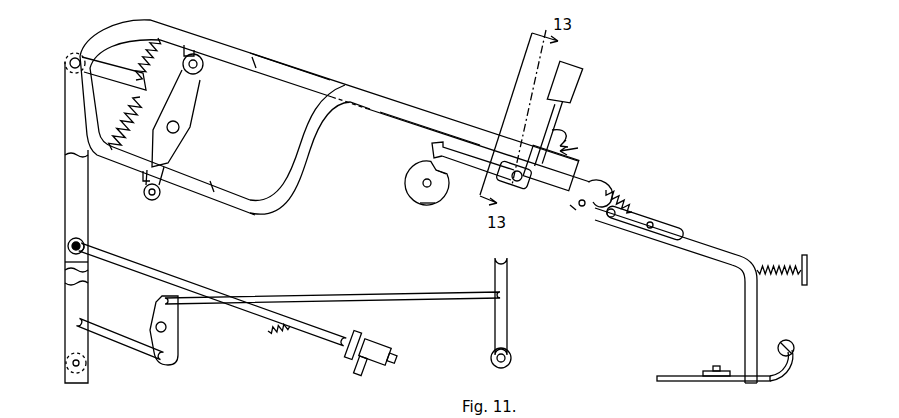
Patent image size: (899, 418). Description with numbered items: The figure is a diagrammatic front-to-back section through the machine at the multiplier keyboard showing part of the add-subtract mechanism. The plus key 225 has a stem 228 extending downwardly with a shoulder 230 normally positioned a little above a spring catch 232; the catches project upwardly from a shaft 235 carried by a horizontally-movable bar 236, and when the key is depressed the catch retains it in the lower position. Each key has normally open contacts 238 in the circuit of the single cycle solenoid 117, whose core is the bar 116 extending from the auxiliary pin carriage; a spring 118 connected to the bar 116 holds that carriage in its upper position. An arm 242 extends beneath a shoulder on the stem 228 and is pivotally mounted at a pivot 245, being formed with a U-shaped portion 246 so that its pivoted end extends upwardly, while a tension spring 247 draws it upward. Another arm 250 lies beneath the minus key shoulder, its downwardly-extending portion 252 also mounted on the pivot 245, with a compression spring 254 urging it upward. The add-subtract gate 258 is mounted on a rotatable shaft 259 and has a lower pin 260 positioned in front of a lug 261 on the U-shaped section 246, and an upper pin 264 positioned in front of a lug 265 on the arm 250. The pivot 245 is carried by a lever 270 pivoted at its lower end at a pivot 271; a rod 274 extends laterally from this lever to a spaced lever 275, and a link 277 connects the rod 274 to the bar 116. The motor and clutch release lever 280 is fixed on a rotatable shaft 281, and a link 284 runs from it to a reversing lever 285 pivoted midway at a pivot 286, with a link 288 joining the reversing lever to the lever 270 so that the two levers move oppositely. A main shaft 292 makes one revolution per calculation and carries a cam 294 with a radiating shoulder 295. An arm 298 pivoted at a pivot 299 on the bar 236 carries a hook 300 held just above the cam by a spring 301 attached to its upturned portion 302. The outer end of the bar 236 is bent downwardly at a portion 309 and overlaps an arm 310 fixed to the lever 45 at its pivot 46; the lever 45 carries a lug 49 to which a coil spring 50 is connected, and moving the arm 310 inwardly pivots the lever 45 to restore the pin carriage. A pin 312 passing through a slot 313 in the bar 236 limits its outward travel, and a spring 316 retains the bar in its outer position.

The lever 45 is at (660, 374).
The pivot 46 is at (716, 365).
The lug 49 is at (780, 342).
The coil spring 50 is at (795, 370).
The bar 116 is at (400, 358).
The single cycle solenoid 117 is at (362, 340).
The spring 118 is at (273, 335).
The plus key 225 is at (572, 82).
The stem 228 is at (558, 115).
The shoulder 230 is at (543, 151).
The spring catch 232 is at (510, 166).
The shaft 235 is at (515, 185).
The bar 236 is at (700, 242).
The contacts 238 is at (580, 142).
The arm 242 is at (393, 110).
The pivot 245 is at (65, 63).
The U-shaped portion 246 is at (257, 210).
The tension spring 247 is at (122, 115).
The arm 250 is at (318, 80).
The downwardly-extending portion 252 is at (105, 34).
The compression spring 254 is at (163, 45).
The add-subtract gate 258 is at (188, 112).
The rotatable shaft 259 is at (178, 132).
The pin 260 is at (155, 200).
The lug 261 is at (140, 176).
The pin 264 is at (200, 68).
The lug 265 is at (200, 45).
The lever 270 is at (67, 165).
The pivot 271 is at (72, 384).
The rod 274 is at (68, 246).
The lever 275 is at (75, 270).
The link 277 is at (176, 282).
The motor and clutch release lever 280 is at (508, 325).
The rotatable shaft 281 is at (512, 358).
The link 284 is at (370, 293).
The reversing lever 285 is at (180, 318).
The pivot 286 is at (170, 335).
The link 288 is at (113, 345).
The main shaft 292 is at (423, 183).
The cam 294 is at (432, 205).
The shoulder 295 is at (428, 162).
The arm 298 is at (572, 208).
The pivot 299 is at (582, 207).
The hook 300 is at (432, 148).
The spring 301 is at (625, 195).
The upturned portion 302 is at (600, 180).
The downwardly bent outer end 309 is at (748, 298).
The arm 310 is at (705, 370).
The pin 312 is at (612, 217).
The slot 313 is at (665, 225).
The spring 316 is at (786, 265).